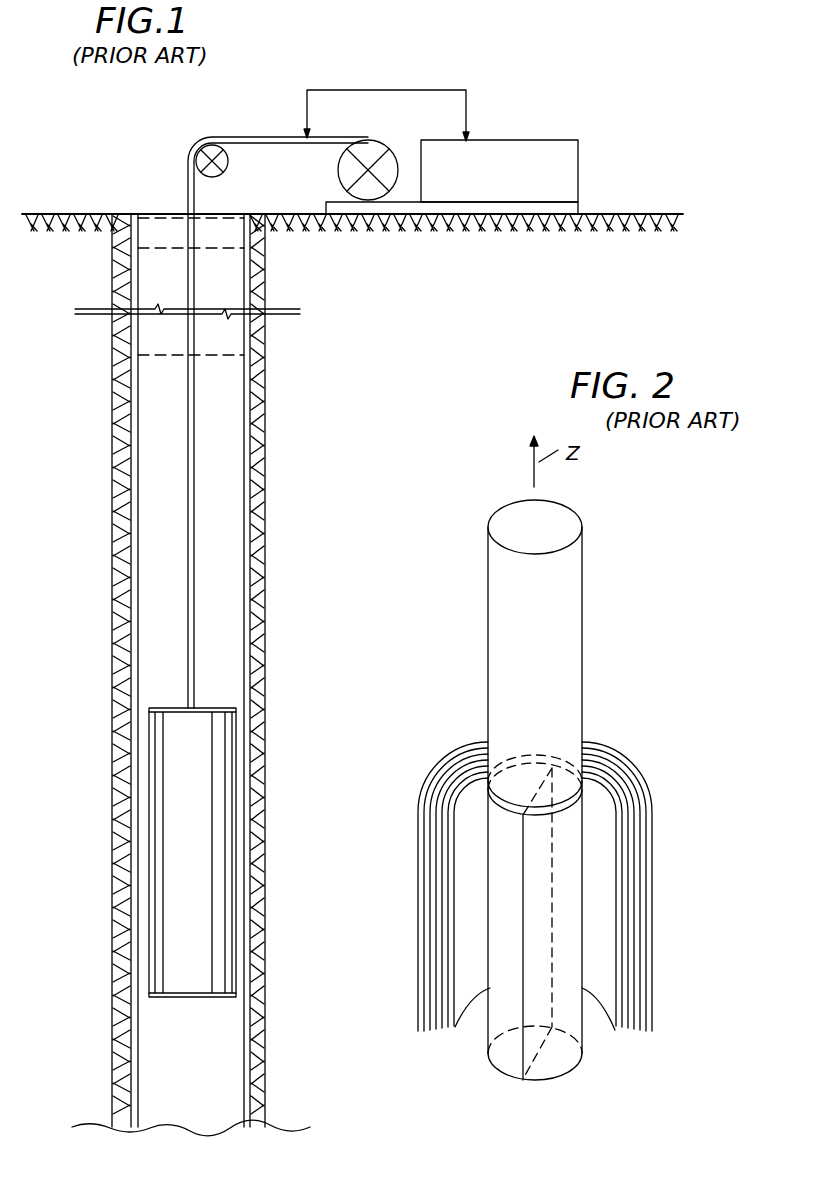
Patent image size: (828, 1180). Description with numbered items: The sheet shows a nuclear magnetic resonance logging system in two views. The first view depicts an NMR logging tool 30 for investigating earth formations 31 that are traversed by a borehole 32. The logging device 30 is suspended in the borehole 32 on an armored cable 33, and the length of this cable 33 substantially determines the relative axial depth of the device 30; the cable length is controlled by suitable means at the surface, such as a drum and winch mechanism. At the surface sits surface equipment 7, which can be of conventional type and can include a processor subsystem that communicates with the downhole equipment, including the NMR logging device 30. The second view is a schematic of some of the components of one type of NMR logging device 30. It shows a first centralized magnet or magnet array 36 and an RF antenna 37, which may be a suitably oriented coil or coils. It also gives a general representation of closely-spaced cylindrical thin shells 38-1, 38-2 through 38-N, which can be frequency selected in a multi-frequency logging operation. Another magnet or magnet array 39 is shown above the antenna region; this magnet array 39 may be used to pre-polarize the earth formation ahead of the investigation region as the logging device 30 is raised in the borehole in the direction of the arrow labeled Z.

In FIG. 1, the surface equipment 7 is at (580, 150).
In FIG. 1, the NMR logging tool 30 is at (151, 771).
In FIG. 1, the earth formations 31 is at (83, 212).
In FIG. 1, the borehole 32 is at (162, 234).
In FIG. 1, the armored cable 33 is at (187, 212).
In FIG. 2, the first centralized magnet or magnet array 36 is at (502, 861).
In FIG. 2, the RF antenna 37 is at (522, 944).
In FIG. 2, the cylindrical thin shell 38-1 is at (615, 850).
In FIG. 2, the cylindrical thin shell 38-2 is at (622, 880).
In FIG. 2, the cylindrical thin shell 38-N is at (648, 953).
In FIG. 2, the magnet or magnet array 39 is at (570, 605).